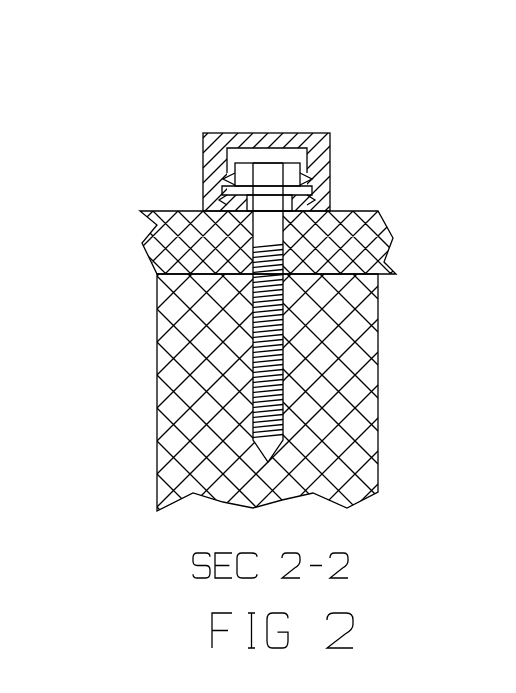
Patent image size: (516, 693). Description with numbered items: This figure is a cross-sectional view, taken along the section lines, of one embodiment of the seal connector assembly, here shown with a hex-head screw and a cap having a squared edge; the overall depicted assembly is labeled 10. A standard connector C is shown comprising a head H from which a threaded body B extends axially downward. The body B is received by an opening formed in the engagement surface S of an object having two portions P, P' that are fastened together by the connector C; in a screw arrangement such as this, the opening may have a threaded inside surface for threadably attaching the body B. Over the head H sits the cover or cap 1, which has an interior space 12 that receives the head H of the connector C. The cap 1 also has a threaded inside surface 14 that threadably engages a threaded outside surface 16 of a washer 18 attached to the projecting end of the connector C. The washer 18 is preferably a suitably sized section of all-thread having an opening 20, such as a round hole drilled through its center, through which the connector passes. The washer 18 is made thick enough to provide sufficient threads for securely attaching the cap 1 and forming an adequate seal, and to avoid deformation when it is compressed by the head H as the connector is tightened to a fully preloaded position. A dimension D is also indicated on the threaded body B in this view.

The cap 1 is at (223, 137).
The fastener assembly 10 is at (271, 86).
The interior space 12 is at (283, 155).
The threaded inside surface 14 is at (235, 177).
The threaded outside surface 16 is at (330, 183).
The washer 18 is at (227, 193).
The opening 20 is at (225, 197).
The connector C is at (261, 151).
The head H is at (287, 170).
The engagement surface S is at (367, 209).
The threaded body B is at (267, 228).
The portion P is at (232, 246).
The portion P' is at (222, 392).
The depth D is at (283, 335).